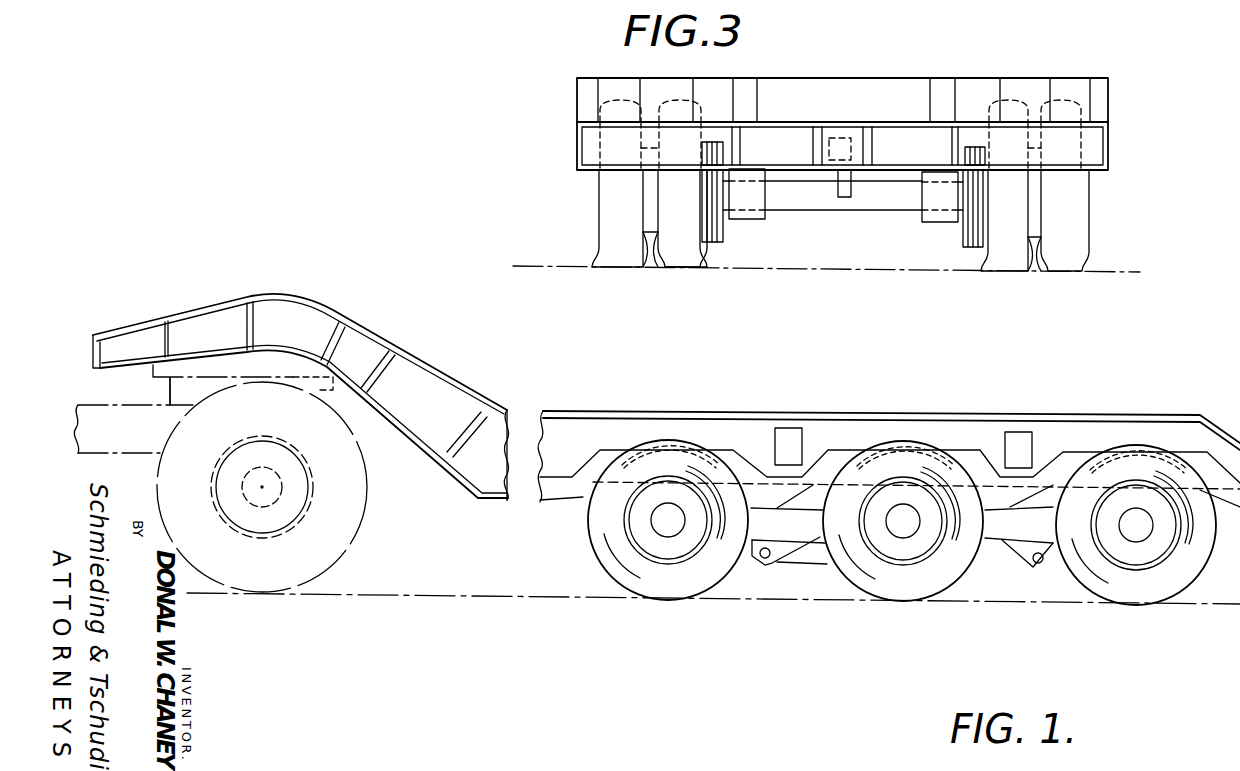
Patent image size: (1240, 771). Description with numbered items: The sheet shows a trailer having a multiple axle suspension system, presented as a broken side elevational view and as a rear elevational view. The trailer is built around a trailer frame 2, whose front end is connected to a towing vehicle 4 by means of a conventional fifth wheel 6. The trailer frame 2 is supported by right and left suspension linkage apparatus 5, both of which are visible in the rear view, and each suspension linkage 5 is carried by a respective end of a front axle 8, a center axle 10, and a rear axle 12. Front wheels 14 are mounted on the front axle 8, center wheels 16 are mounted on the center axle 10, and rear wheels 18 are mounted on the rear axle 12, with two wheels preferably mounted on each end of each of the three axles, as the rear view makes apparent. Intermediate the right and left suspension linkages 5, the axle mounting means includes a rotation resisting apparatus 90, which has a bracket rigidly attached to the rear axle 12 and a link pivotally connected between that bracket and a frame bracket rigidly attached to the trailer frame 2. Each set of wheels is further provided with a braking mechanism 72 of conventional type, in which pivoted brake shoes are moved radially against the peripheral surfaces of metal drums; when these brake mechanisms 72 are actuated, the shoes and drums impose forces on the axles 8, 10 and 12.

In FIG. 3, the trailer frame 2 is at (830, 76).
In FIG. 1, the trailer frame 2 is at (694, 408).
In FIG. 1, the towing vehicle 4 is at (278, 570).
In FIG. 3, the suspension linkage apparatus 5 is at (746, 226).
In FIG. 1, the suspension linkage apparatus 5 is at (771, 575).
In FIG. 1, the fifth wheel 6 is at (263, 368).
In FIG. 1, the front axle 8 is at (665, 527).
In FIG. 1, the center axle 10 is at (905, 530).
In FIG. 3, the rear axle 12 is at (808, 196).
In FIG. 1, the rear axle 12 is at (1137, 523).
In FIG. 1, the front wheels 14 is at (678, 587).
In FIG. 1, the center wheels 16 is at (898, 580).
In FIG. 3, the rear wheels 18 is at (608, 253).
In FIG. 1, the rear wheels 18 is at (1135, 587).
In FIG. 3, the braking mechanism 72 is at (717, 249).
In FIG. 3, the rotation resisting apparatus 90 is at (857, 195).